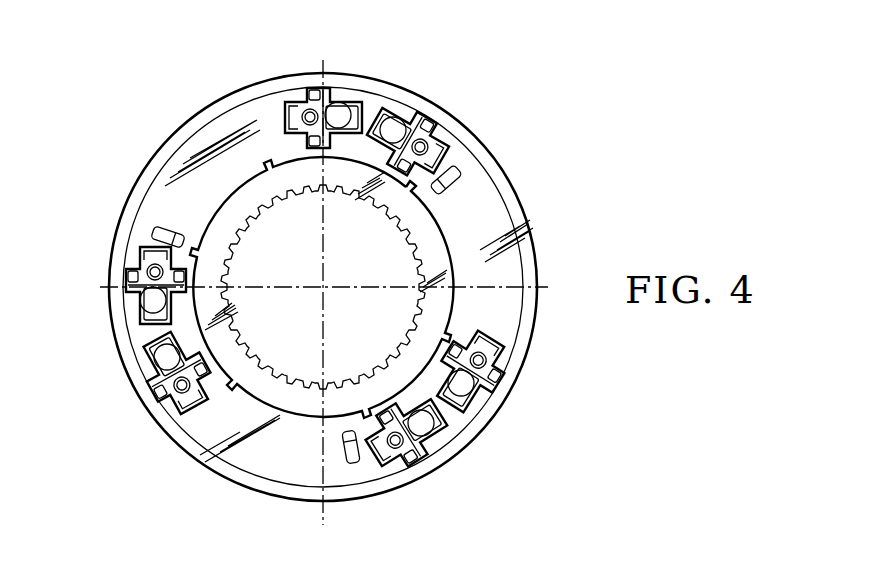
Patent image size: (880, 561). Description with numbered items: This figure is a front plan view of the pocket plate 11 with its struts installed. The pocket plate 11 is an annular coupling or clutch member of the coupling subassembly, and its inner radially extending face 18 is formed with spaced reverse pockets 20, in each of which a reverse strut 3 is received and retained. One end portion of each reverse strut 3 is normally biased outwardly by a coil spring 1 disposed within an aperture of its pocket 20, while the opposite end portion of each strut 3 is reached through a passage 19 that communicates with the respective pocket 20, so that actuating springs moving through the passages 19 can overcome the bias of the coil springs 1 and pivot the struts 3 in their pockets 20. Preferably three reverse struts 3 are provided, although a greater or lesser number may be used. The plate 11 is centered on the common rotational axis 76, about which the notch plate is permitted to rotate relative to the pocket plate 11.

The coil spring 1 is at (308, 265).
The reverse strut 3 is at (333, 88).
The pocket plate 11 is at (462, 112).
The inner radially extending face 18 is at (475, 215).
The passage 19 is at (352, 130).
The reverse pocket 20 is at (350, 102).
The rotational axis 76 is at (313, 287).